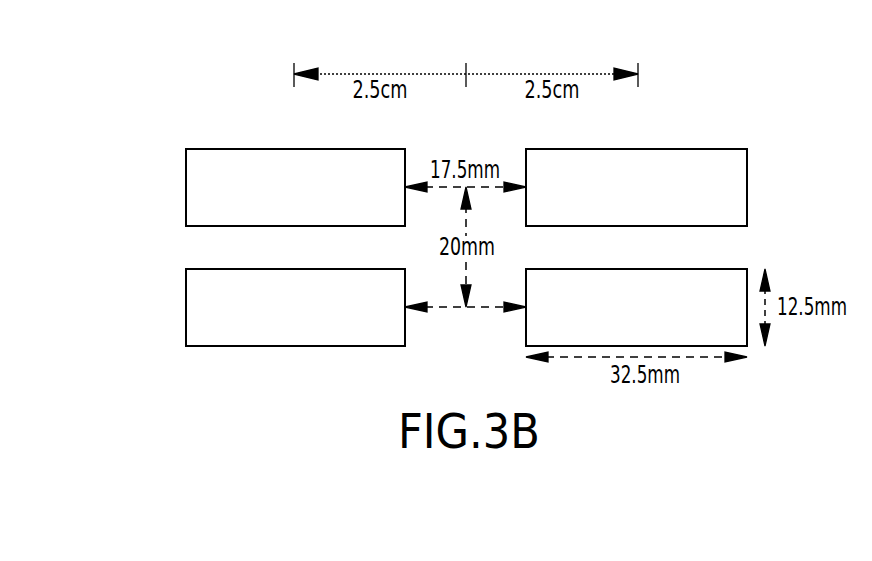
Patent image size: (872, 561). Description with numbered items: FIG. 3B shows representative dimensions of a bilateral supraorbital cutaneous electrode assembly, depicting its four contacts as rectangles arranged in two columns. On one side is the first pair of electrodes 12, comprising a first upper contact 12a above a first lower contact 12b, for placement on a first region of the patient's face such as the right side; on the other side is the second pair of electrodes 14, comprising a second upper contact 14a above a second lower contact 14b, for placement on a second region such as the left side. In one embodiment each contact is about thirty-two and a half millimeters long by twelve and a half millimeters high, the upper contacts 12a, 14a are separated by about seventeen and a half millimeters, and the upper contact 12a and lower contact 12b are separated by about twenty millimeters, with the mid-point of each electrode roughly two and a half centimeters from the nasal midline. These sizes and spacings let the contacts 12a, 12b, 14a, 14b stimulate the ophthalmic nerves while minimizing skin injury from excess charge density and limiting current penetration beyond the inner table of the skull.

The first pair of electrodes 12 is at (150, 222).
The first upper contact 12a is at (250, 149).
The first lower contact 12b is at (252, 346).
The second pair of electrodes 14 is at (777, 223).
The second upper contact 14a is at (623, 149).
The second lower contact 14b is at (733, 275).